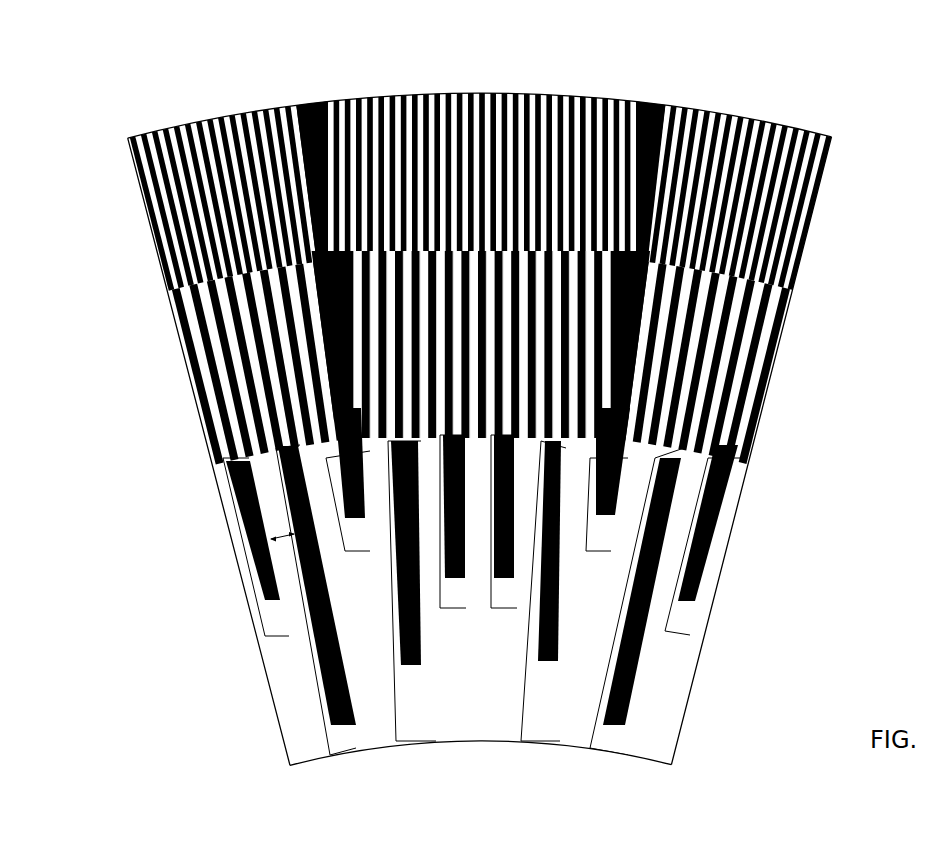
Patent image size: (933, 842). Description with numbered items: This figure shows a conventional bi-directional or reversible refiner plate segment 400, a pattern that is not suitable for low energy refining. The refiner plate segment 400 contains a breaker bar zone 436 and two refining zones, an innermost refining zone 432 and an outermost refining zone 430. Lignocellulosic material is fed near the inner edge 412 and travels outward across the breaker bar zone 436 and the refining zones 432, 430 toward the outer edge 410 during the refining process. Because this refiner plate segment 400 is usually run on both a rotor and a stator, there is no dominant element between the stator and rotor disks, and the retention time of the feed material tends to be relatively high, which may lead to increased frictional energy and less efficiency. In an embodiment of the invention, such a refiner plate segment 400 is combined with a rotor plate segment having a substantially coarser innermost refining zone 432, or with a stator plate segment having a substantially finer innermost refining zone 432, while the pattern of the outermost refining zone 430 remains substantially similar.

The bi-directional refiner plate segment 400 is at (473, 434).
The outer edge 410 is at (581, 86).
The inner edge 412 is at (473, 735).
The outermost refining zone 430 is at (512, 191).
The innermost refining zone 432 is at (511, 357).
The breaker bar zone 436 is at (518, 589).